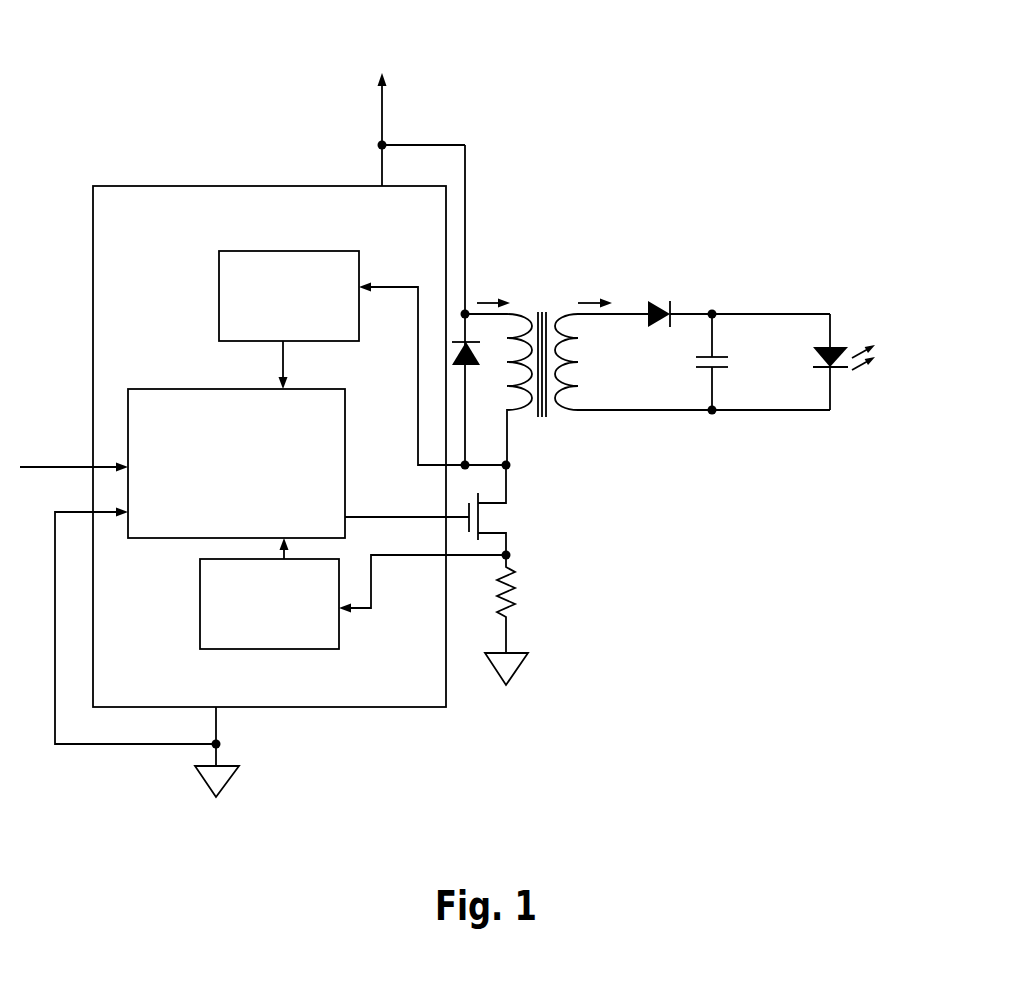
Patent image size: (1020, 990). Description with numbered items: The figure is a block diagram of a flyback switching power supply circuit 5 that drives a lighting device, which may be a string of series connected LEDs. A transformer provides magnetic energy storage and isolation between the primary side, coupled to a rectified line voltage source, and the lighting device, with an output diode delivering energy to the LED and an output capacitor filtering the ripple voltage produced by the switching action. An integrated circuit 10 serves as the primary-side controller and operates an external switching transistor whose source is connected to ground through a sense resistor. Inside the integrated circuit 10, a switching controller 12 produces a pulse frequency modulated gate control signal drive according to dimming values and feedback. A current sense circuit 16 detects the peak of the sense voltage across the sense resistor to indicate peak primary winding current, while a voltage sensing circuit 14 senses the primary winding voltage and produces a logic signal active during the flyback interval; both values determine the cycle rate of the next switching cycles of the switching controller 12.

The flyback switching power supply circuit 5 is at (762, 127).
The integrated circuit 10 is at (131, 216).
The switching controller 12 is at (167, 446).
The voltage sensing circuit 14 is at (322, 306).
The current sense circuit 16 is at (303, 614).